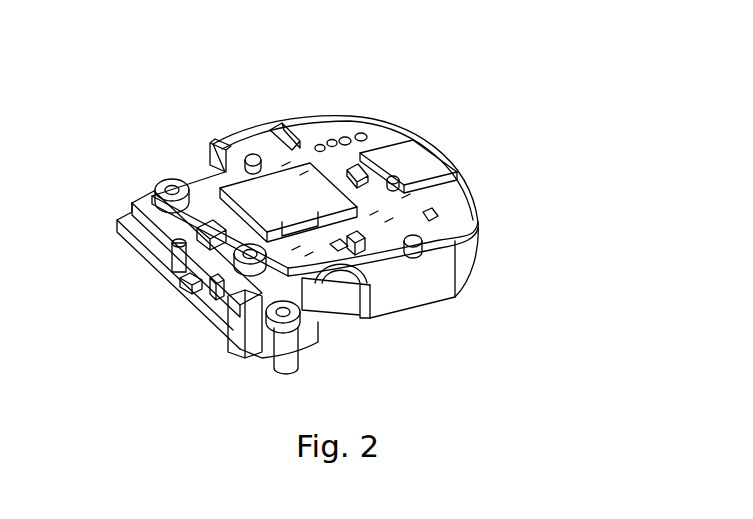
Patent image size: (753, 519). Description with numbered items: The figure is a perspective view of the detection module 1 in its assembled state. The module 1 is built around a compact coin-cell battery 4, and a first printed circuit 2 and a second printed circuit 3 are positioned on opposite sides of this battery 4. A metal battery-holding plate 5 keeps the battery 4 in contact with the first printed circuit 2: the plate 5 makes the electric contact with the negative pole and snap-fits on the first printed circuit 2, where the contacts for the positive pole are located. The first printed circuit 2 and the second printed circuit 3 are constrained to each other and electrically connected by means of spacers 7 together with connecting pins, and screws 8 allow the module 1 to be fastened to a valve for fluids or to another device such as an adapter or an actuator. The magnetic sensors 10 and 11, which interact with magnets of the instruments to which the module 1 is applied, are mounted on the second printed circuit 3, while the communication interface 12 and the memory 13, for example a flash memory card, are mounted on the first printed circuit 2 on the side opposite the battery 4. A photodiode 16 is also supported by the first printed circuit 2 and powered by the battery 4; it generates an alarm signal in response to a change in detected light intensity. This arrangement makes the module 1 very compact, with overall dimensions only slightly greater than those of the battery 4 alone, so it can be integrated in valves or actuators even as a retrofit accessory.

The detection module 1 is at (397, 105).
The first printed circuit 2 is at (150, 192).
The second printed circuit 3 is at (120, 238).
The compact battery 4 is at (342, 302).
The metal battery-holding plate 5 is at (408, 297).
The spacers 7 is at (243, 312).
The screws 8 is at (281, 330).
The magnetic sensor 10 is at (185, 296).
The magnetic sensor 11 is at (182, 292).
The communication interface 12 is at (247, 194).
The memory 13 is at (420, 156).
The photodiode 16 is at (362, 240).